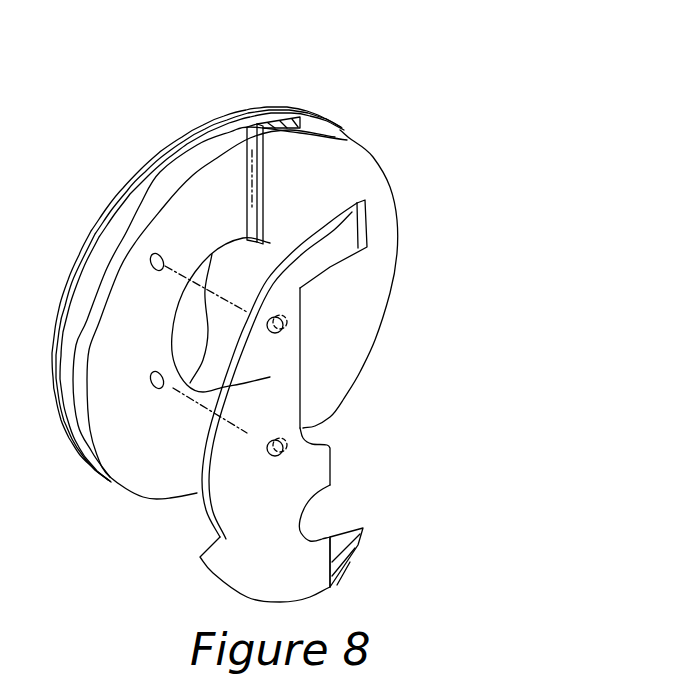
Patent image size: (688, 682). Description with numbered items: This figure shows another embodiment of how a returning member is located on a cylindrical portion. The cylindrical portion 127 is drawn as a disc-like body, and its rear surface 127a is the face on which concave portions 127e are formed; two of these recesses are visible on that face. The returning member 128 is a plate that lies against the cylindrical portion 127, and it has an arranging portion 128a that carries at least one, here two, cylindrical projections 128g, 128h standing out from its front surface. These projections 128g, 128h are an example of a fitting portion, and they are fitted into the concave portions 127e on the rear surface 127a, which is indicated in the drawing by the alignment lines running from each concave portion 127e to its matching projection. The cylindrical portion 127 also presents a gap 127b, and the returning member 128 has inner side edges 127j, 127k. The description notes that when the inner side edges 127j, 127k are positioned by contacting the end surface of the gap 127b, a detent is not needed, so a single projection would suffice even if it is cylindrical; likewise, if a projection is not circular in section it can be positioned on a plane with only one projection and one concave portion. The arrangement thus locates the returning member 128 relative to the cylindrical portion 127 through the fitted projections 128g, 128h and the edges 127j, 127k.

The cylindrical portion 127 is at (216, 254).
The rear surface 127a is at (262, 150).
The gap 127b is at (213, 192).
The concave portions 127e is at (159, 253).
The inner side edge 127j is at (367, 227).
The inner side edge 127k is at (333, 545).
The returning member 128 is at (309, 327).
The arranging portion 128a is at (223, 500).
The cylindrical projection 128g is at (277, 317).
The cylindrical projection 128h is at (272, 440).